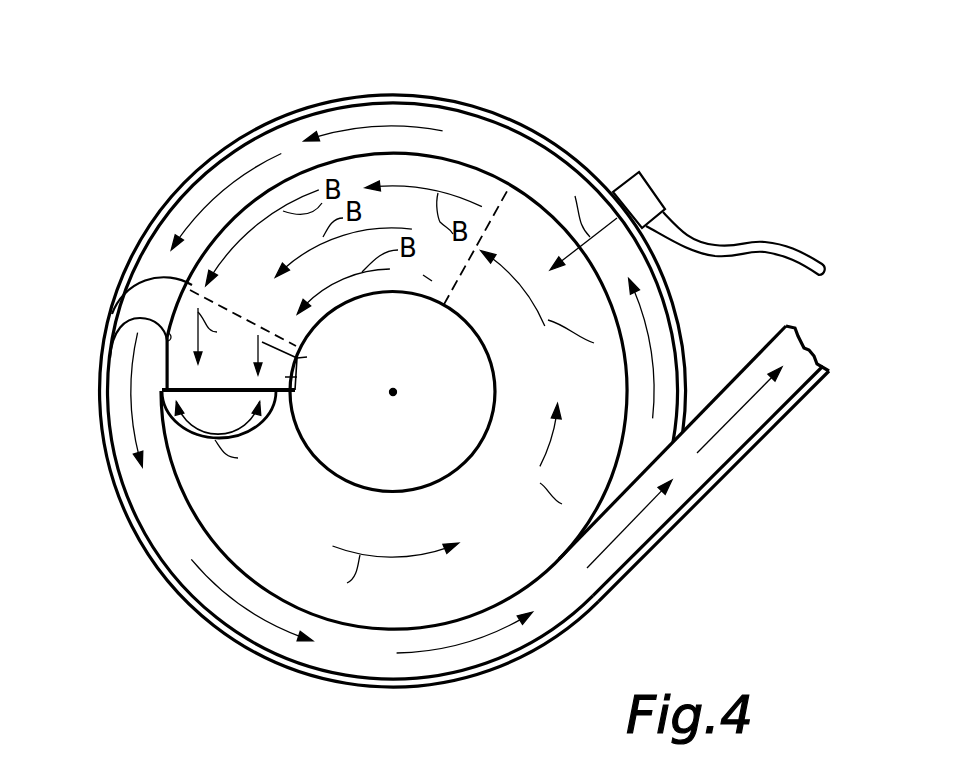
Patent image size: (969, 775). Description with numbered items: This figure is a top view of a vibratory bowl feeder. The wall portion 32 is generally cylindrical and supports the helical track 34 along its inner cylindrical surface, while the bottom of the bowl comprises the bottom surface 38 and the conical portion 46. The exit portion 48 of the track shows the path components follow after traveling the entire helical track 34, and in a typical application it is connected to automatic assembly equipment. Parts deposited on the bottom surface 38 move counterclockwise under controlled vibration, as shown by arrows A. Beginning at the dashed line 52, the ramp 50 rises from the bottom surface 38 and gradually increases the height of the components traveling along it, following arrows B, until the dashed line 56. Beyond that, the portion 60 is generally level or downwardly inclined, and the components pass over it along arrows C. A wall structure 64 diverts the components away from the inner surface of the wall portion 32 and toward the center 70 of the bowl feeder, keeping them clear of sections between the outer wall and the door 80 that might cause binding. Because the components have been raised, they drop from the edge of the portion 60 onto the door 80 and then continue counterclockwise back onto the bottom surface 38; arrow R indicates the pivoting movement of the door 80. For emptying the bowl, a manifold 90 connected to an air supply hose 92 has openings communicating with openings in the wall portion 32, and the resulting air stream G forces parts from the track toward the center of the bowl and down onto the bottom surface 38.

The wall portion 32 is at (164, 205).
The helical track 34 is at (520, 158).
The bottom surface 38 is at (518, 553).
The conical portion 46 is at (424, 453).
The exit portion 48 is at (707, 487).
The ramp 50 is at (428, 277).
The dashed line 52 is at (460, 282).
The dashed line 56 is at (116, 301).
The portion 60 is at (290, 383).
The wall structure 64 is at (106, 355).
The center 70 is at (394, 390).
The door 80 is at (207, 437).
The manifold 90 is at (633, 196).
The air supply hose 92 is at (732, 250).